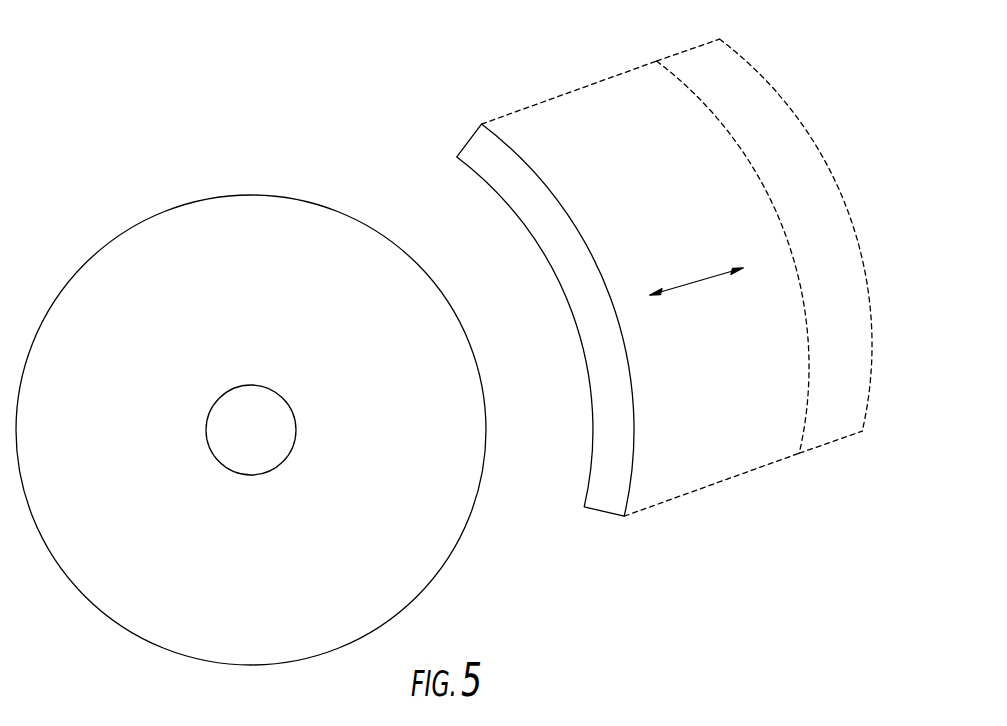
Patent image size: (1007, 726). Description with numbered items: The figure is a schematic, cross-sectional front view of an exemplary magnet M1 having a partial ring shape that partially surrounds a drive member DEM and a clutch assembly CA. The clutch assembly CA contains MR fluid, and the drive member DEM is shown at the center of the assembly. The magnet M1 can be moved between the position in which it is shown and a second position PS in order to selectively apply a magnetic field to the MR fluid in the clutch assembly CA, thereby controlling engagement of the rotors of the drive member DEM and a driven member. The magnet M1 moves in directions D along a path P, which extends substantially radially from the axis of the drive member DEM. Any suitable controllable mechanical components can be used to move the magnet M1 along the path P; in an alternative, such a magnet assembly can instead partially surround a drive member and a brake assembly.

The clutch assembly CA is at (433, 577).
The drive member DEM is at (258, 475).
The magnet M1 is at (608, 512).
The path P is at (578, 90).
The position PS is at (740, 55).
The directions D is at (712, 278).